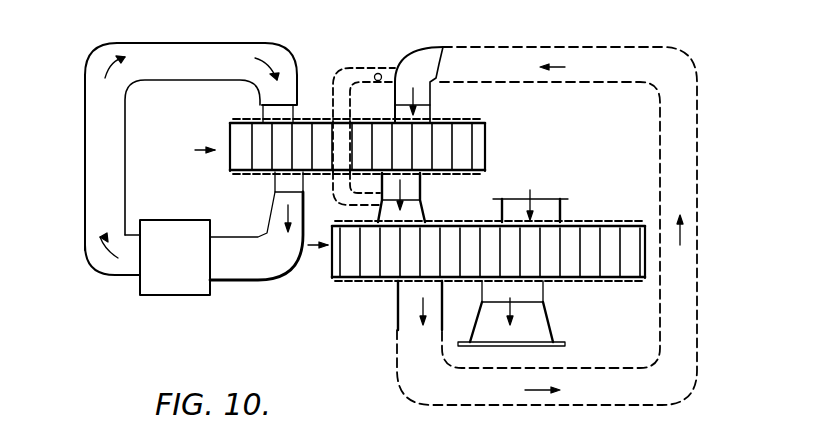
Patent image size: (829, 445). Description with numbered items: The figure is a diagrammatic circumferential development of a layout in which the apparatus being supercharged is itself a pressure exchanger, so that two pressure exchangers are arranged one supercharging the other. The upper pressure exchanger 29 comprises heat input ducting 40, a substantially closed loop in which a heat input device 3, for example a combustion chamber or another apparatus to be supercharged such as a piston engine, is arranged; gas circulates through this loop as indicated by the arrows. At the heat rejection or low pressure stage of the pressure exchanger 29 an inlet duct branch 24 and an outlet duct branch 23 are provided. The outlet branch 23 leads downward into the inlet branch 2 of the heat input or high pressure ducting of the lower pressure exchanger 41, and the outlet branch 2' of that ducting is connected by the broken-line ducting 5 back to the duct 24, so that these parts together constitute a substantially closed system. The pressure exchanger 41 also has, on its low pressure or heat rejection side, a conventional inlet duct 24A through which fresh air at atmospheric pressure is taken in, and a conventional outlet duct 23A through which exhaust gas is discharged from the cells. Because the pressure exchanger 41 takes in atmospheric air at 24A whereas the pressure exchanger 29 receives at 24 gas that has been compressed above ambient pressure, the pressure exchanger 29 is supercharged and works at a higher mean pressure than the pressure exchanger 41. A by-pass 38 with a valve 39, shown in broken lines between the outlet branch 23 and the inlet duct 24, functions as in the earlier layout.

The inlet branch 2 is at (488, 238).
The outlet branch 2' is at (387, 305).
The heat input device 3 is at (185, 271).
The ducting 5 is at (660, 132).
The outlet duct branch 23 is at (412, 190).
The outlet duct 23A is at (535, 322).
The inlet duct branch 24 is at (420, 118).
The inlet duct 24A is at (547, 200).
The pressure exchanger 29 is at (228, 135).
The by-pass 38 is at (333, 95).
The valve 39 is at (378, 73).
The heat input ducting 40 is at (125, 180).
The pressure exchanger 41 is at (633, 210).